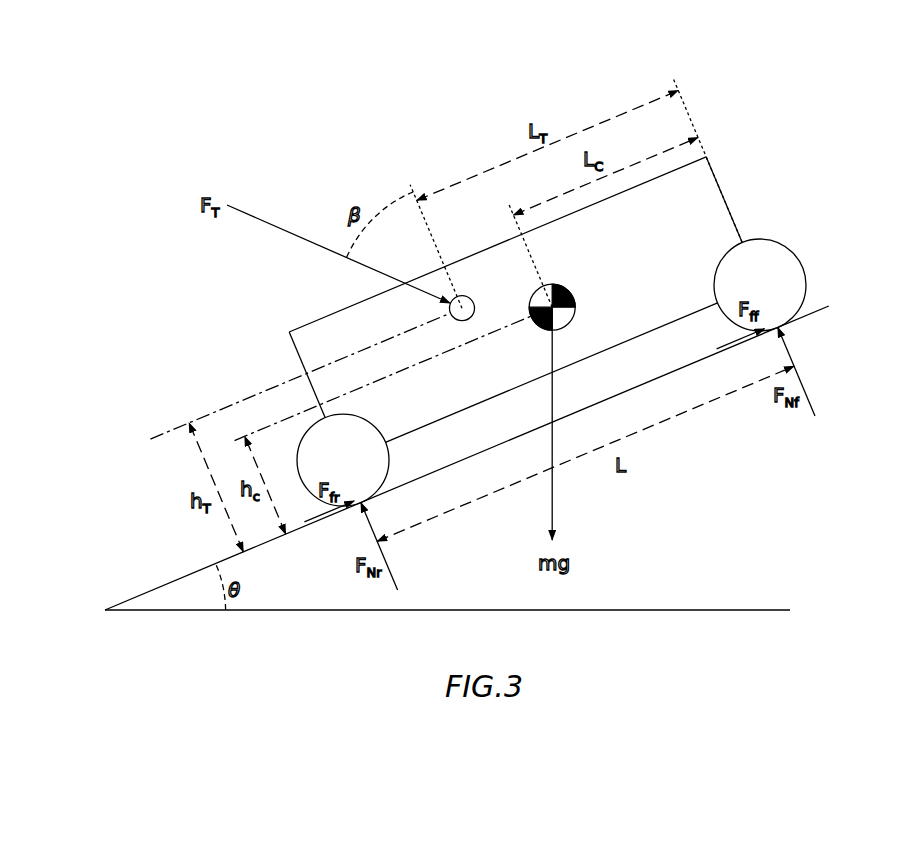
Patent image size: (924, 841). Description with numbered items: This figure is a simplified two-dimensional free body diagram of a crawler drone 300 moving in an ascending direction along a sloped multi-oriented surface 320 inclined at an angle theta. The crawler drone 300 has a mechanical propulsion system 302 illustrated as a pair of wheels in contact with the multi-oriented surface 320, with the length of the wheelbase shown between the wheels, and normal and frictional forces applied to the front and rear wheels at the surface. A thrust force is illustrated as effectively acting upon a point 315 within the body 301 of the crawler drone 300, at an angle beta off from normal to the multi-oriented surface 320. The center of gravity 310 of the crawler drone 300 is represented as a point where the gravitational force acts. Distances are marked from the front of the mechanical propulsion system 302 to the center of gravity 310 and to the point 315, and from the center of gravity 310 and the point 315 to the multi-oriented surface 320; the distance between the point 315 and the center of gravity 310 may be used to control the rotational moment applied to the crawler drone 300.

The crawler drone 300 is at (597, 317).
The body 301 is at (709, 192).
The mechanical propulsion system 302 is at (373, 423).
The center of gravity 310 is at (571, 290).
The point 315 is at (448, 308).
The multi-oriented surface 320 is at (661, 388).